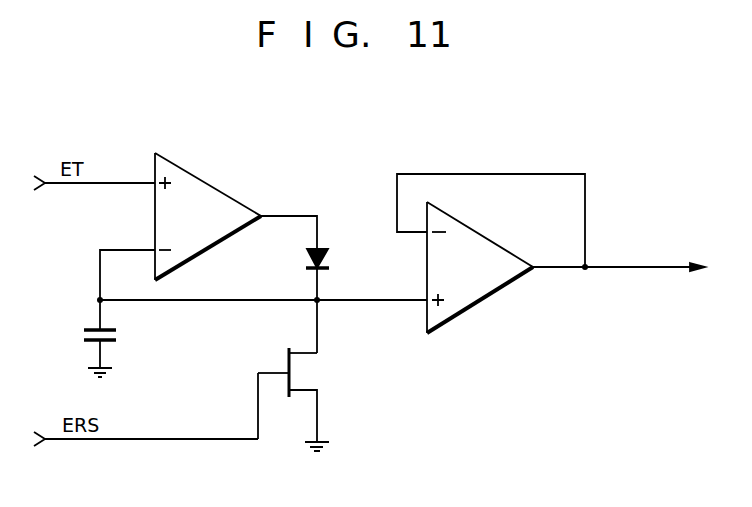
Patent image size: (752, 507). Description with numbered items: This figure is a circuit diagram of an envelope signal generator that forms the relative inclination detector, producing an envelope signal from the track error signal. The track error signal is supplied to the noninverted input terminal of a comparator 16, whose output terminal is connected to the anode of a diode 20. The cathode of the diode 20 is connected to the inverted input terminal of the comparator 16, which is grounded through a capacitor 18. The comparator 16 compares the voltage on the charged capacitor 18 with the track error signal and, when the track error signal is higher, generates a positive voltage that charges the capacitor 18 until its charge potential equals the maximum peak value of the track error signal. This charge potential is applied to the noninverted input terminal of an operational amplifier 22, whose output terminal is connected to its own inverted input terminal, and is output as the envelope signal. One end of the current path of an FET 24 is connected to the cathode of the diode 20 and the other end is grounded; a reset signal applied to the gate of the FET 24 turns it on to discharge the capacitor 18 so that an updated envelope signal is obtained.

The comparator 16 is at (212, 198).
The capacitor 18 is at (120, 336).
The diode 20 is at (321, 251).
The operational amplifier 22 is at (485, 250).
The FET 24 is at (306, 374).